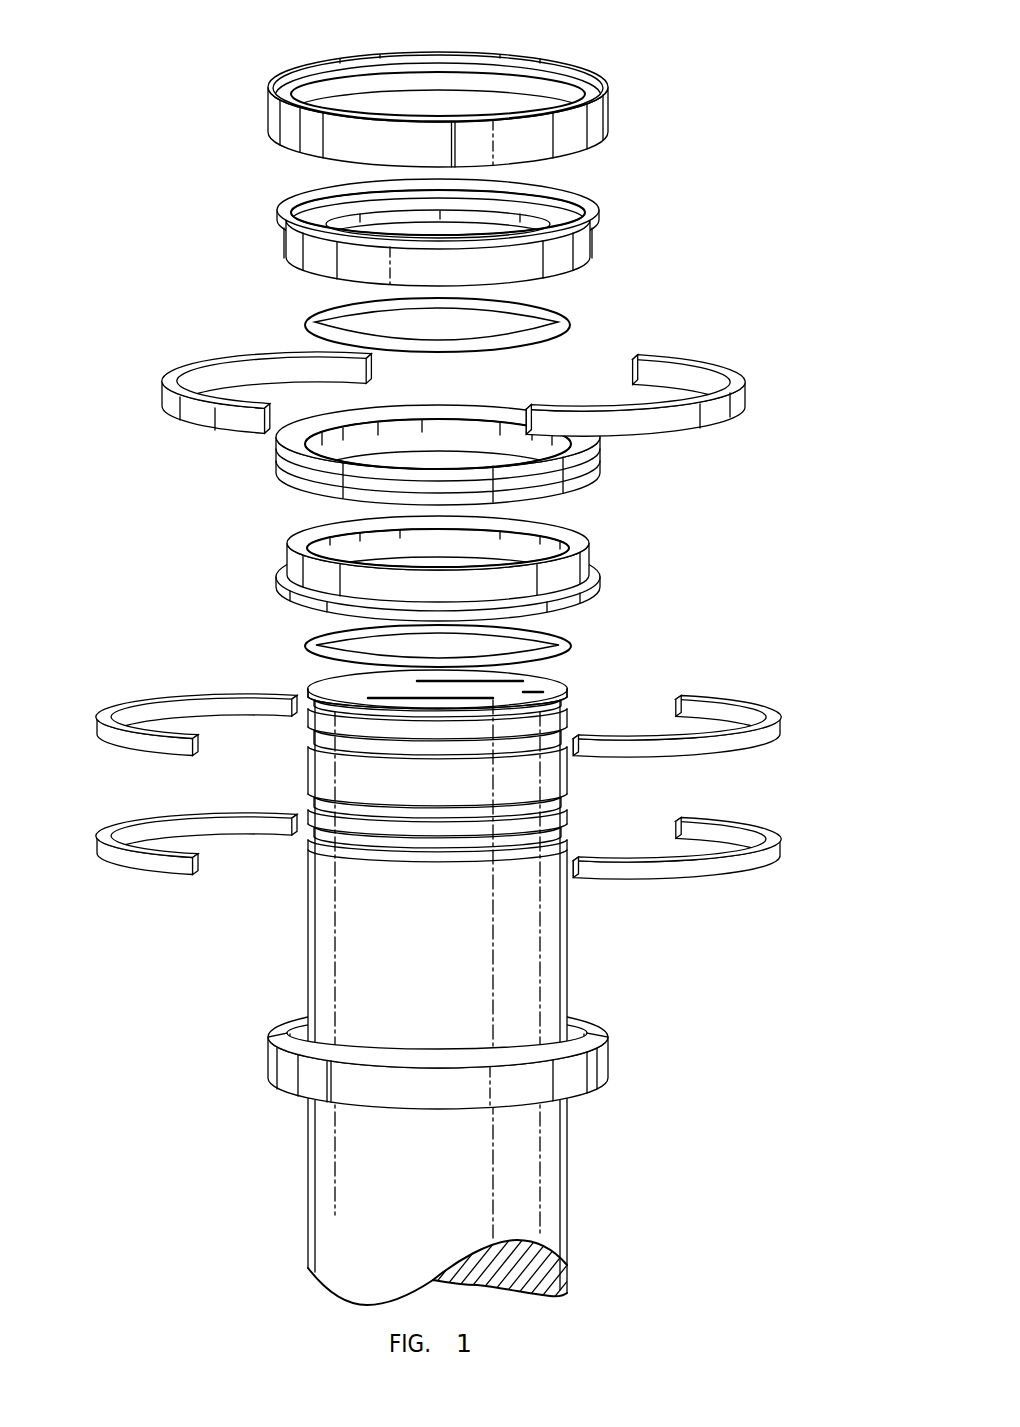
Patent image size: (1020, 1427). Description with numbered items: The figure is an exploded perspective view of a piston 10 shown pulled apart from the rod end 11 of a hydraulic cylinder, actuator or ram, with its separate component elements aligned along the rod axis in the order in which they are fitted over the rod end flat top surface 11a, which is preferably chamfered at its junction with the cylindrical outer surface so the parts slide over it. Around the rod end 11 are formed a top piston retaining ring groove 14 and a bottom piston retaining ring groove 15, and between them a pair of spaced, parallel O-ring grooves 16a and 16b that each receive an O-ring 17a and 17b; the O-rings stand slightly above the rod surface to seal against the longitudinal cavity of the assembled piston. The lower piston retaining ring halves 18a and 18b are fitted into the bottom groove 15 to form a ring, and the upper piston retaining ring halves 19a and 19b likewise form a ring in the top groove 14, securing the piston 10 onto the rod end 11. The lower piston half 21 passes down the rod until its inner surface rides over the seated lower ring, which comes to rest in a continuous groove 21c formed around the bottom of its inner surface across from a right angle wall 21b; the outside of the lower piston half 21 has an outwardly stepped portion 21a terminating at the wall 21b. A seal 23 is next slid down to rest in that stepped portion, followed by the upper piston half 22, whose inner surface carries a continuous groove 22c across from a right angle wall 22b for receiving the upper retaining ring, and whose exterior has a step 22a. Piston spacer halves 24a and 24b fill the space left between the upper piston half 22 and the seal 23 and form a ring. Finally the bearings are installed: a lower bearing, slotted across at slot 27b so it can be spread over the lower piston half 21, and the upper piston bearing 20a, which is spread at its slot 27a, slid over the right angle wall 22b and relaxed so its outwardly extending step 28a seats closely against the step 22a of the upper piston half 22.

The piston 10 is at (716, 343).
The rod end 11 is at (436, 988).
The rod end flat top surface 11a is at (325, 683).
The top piston retaining ring groove 14 is at (562, 708).
The bottom piston retaining ring groove 15 is at (527, 854).
The O-ring groove 16a is at (566, 747).
The O-ring groove 16b is at (570, 812).
The O-ring 17a is at (570, 323).
The O-ring 17b is at (580, 643).
The lower piston retaining ring half 18a is at (145, 870).
The lower piston retaining ring half 18b is at (742, 862).
The upper piston retaining ring half 19a is at (135, 742).
The upper piston retaining ring half 19b is at (745, 697).
The upper piston bearing 20a is at (608, 122).
The lower piston half 21 is at (604, 603).
The outwardly stepped portion 21a is at (588, 555).
The right angle wall 21b is at (600, 578).
The continuous groove 21c is at (515, 537).
The upper piston half 22 is at (593, 227).
The step 22a is at (590, 258).
The right angle wall 22b is at (288, 240).
The continuous groove 22c is at (525, 209).
The seal 23 is at (305, 478).
The piston spacer half 24a is at (185, 417).
The piston spacer half 24b is at (735, 405).
The slot 27a is at (453, 147).
The slot 27b is at (322, 1080).
The outwardly extending step 28a is at (512, 63).